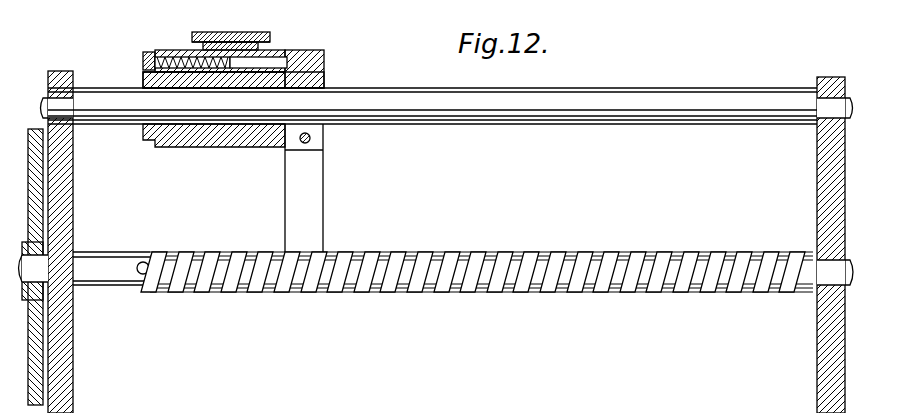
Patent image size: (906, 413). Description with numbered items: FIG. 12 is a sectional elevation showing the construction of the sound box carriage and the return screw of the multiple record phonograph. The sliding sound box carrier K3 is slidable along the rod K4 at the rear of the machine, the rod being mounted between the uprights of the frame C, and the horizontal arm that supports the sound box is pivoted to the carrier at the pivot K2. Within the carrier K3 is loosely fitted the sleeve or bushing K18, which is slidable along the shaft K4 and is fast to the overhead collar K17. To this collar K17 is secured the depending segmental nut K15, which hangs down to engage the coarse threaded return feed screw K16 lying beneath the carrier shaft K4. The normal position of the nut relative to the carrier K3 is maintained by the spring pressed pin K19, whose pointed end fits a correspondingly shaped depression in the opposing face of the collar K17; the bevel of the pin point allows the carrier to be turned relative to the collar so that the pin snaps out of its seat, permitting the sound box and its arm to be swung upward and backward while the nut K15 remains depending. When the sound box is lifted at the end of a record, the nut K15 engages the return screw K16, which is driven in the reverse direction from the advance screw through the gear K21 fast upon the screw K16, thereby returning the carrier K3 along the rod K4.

The frame C is at (73, 385).
The pivot K2 is at (242, 44).
The sound box carrier K3 is at (167, 148).
The rod K4 is at (432, 122).
The depending segmental nut K15 is at (330, 251).
The return feed screw K16 is at (460, 253).
The collar K17 is at (325, 68).
The sleeve K18 is at (327, 87).
The spring pressed pin K19 is at (273, 65).
The gear K21 is at (36, 347).